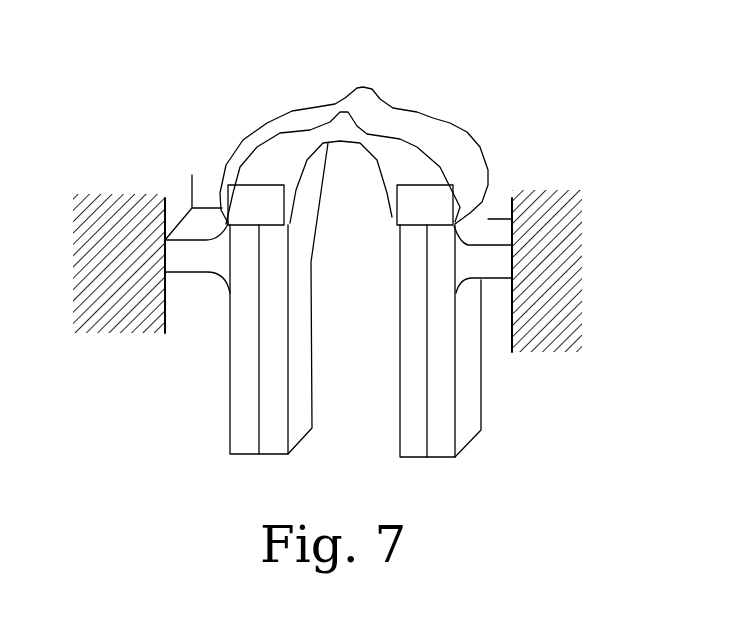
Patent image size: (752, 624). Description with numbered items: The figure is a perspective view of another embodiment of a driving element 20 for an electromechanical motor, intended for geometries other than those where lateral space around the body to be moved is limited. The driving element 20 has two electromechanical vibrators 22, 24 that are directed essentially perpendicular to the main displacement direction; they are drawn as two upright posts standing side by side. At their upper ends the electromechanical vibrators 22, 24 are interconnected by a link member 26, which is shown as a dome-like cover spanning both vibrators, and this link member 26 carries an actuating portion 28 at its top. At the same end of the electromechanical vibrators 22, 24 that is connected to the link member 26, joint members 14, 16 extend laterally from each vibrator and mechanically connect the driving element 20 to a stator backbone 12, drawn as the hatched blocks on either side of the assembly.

The stator backbone 12 is at (112, 208).
The joint member 14 is at (215, 262).
The joint member 16 is at (490, 237).
The driving element 20 is at (551, 430).
The electromechanical vibrator 22 is at (258, 418).
The electromechanical vibrator 24 is at (442, 445).
The link member 26 is at (427, 127).
The actuating portion 28 is at (364, 100).